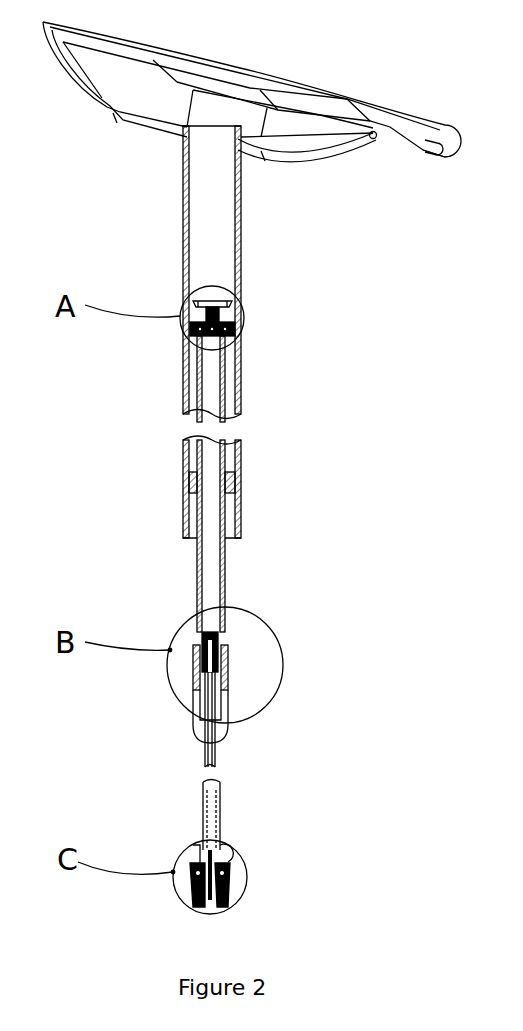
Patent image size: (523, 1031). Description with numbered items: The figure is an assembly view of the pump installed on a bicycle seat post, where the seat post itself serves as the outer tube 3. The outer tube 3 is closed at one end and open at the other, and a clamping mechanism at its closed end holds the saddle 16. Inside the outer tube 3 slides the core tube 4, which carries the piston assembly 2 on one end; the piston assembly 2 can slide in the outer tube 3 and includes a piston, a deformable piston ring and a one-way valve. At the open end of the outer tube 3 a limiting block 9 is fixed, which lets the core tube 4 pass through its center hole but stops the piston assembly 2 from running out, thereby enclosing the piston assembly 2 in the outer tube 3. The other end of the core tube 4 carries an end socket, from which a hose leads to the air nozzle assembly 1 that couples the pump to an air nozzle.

The saddle 16 is at (232, 73).
The outer tube 3 is at (217, 247).
The piston assembly 2 is at (262, 325).
The limiting block 9 is at (242, 482).
The core tube 4 is at (216, 585).
The air nozzle assembly 1 is at (258, 884).